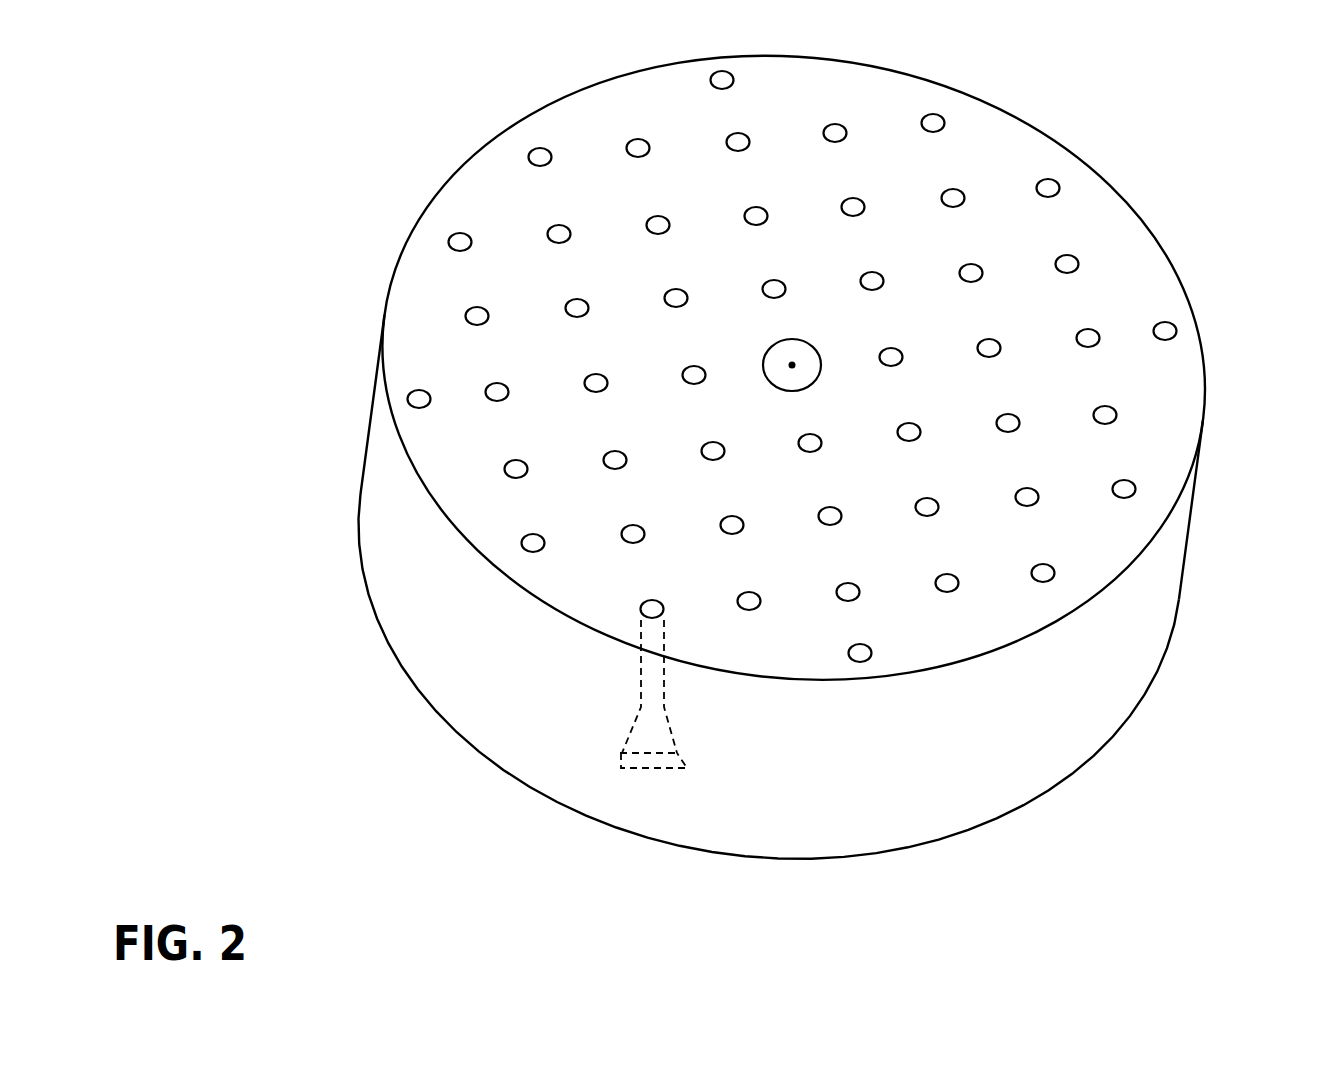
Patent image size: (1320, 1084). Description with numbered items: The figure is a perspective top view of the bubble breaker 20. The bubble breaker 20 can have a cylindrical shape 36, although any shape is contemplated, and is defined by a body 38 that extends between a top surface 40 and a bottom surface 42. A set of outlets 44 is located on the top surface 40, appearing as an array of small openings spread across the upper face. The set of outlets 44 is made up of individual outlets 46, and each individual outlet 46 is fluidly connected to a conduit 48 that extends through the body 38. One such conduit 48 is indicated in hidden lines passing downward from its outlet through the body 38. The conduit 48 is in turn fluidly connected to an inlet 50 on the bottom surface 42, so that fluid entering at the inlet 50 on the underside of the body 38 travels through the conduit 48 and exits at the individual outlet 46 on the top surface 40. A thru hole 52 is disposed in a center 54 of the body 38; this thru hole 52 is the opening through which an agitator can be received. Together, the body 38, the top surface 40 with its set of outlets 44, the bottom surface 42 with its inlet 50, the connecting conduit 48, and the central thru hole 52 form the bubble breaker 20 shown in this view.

The bubble breaker 20 is at (272, 85).
The cylindrical shape 36 is at (1187, 533).
The body 38 is at (1124, 681).
The top surface 40 is at (1028, 318).
The bottom surface 42 is at (1096, 751).
The set of outlets 44 is at (503, 560).
The individual outlet 46 is at (650, 606).
The conduit 48 is at (618, 679).
The inlet 50 is at (665, 768).
The thru hole 52 is at (785, 357).
The center 54 is at (792, 365).